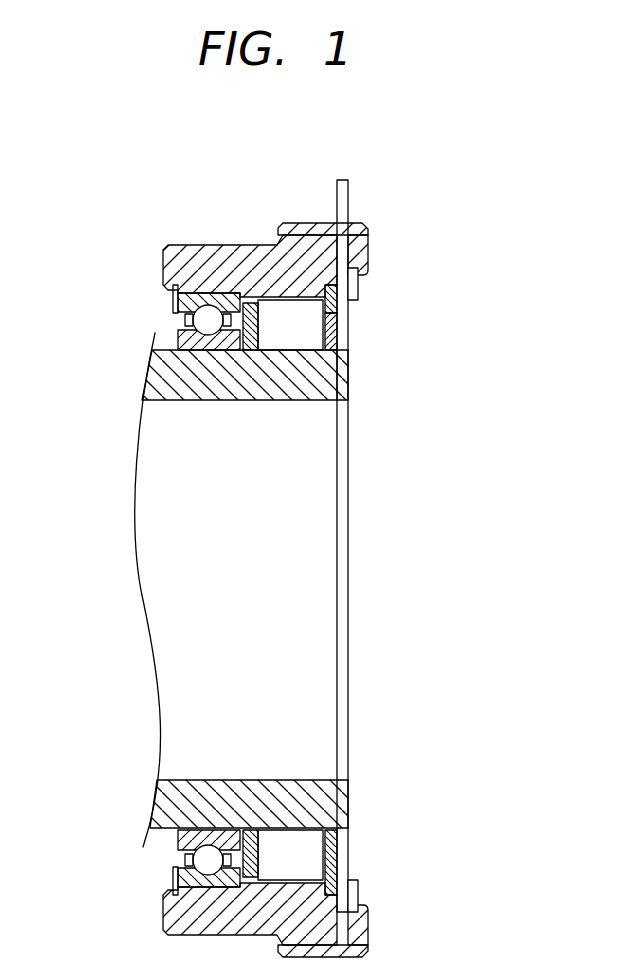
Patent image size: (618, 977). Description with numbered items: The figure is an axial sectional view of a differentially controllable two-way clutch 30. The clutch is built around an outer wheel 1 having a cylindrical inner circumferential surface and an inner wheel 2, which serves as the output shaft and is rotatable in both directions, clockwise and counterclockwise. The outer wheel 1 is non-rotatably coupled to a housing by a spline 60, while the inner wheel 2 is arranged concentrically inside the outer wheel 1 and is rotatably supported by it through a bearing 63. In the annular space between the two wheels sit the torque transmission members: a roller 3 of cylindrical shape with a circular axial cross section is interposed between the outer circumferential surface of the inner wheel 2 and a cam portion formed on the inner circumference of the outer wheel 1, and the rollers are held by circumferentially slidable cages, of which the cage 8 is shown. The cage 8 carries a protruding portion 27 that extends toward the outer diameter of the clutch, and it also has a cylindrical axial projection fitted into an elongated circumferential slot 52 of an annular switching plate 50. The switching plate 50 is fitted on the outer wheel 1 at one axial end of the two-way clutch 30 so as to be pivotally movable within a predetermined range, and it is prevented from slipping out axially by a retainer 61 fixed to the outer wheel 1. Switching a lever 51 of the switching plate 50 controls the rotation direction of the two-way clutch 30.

The outer wheel 1 is at (187, 250).
The inner wheel 2 is at (155, 380).
The roller 3 is at (288, 338).
The cage 8 is at (347, 385).
The protruding portion 27 is at (340, 310).
The two-way clutch 30 is at (413, 198).
The switching plate 50 is at (345, 873).
The lever 51 is at (339, 180).
The elongated circumferential slot 52 is at (342, 335).
The spline 60 is at (298, 228).
The retainer 61 is at (350, 290).
The bearing 63 is at (172, 858).